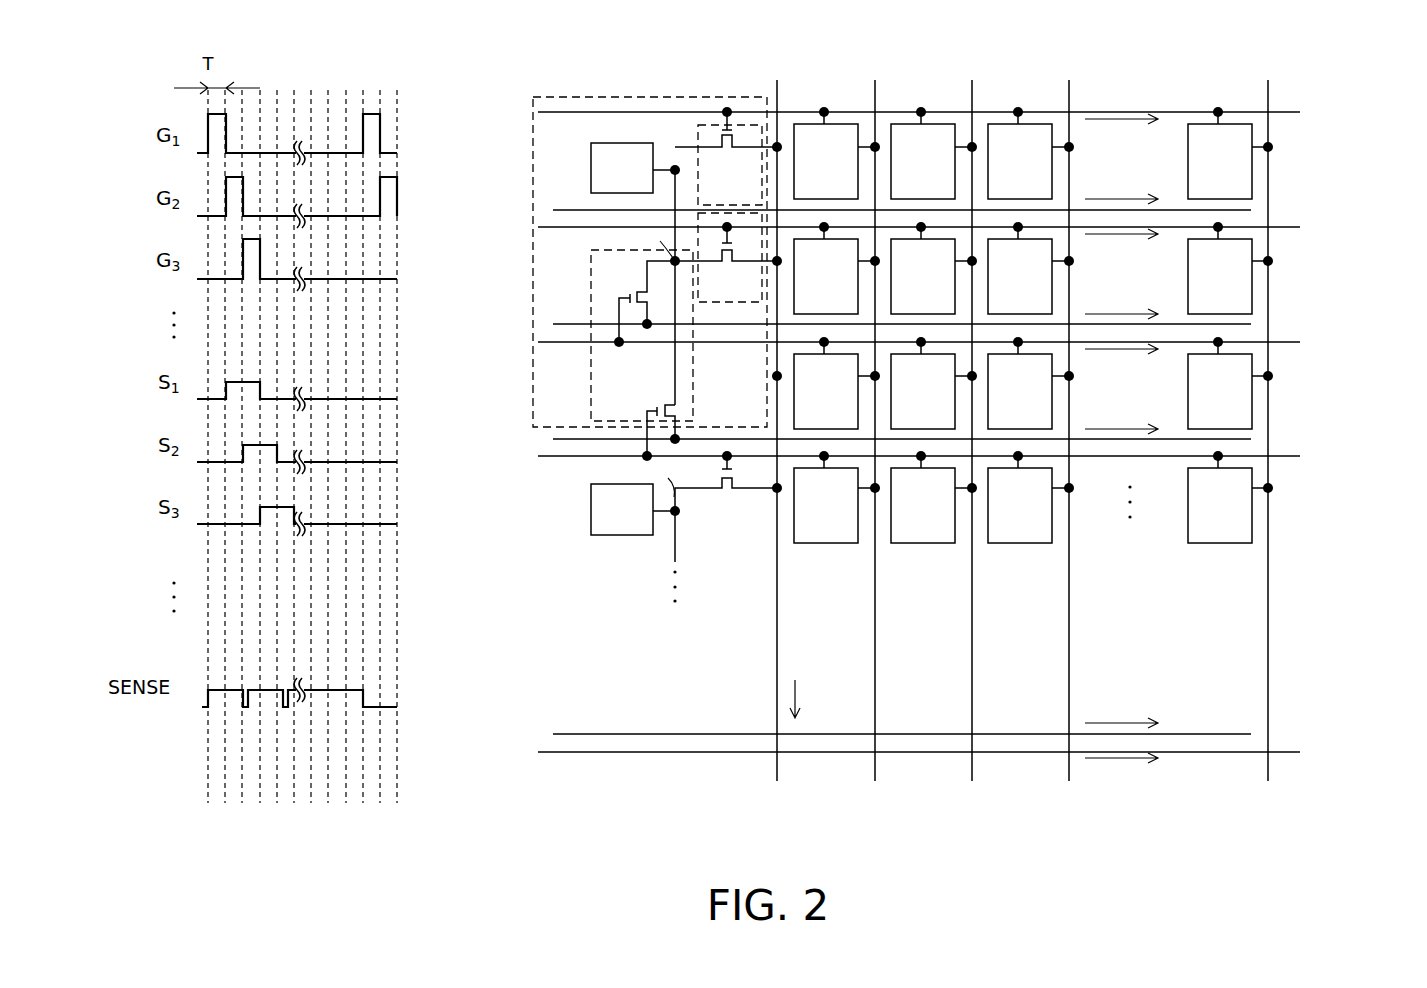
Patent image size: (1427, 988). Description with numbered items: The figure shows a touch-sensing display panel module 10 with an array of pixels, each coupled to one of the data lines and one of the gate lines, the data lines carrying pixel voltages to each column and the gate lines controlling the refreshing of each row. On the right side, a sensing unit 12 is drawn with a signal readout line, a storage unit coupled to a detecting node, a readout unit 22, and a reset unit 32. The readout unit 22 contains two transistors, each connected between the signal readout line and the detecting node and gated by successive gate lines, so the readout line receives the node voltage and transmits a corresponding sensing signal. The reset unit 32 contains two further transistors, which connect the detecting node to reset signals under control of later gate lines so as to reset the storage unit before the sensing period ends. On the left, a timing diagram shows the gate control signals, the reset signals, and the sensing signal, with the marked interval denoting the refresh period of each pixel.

The display device 10 is at (1362, 82).
The sensing unit 12 is at (662, 96).
The readout unit 22 is at (697, 128).
The reset unit 32 is at (591, 300).